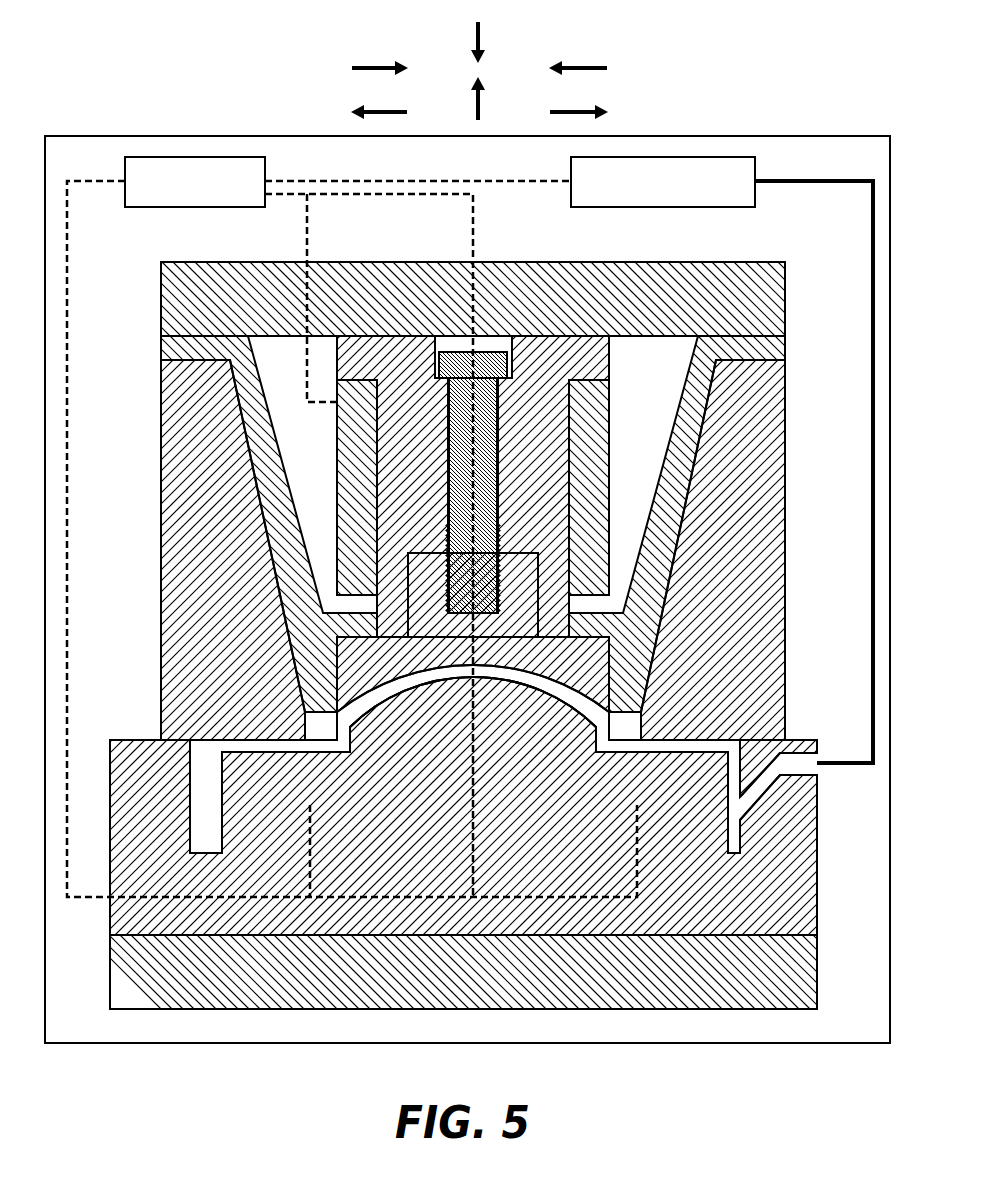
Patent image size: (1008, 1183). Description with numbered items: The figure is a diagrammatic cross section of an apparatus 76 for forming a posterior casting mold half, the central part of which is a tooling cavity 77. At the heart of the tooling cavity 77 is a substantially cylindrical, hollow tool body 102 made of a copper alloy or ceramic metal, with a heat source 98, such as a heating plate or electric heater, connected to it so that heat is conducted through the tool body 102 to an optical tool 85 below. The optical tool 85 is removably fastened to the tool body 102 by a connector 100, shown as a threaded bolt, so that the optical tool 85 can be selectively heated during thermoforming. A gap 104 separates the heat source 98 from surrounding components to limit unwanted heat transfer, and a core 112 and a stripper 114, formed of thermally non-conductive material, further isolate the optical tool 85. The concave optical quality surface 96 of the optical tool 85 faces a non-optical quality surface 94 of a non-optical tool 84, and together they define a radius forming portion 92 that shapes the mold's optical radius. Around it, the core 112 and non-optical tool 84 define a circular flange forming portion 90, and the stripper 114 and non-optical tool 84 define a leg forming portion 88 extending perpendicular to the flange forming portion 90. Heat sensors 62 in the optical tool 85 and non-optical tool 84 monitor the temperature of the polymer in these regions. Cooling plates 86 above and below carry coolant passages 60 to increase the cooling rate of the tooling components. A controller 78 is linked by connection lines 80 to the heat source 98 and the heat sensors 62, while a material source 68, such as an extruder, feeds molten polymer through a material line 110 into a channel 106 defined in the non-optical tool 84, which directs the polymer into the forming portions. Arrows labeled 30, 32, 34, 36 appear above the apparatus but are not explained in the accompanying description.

The first direction 30 is at (370, 66).
The second direction 32 is at (477, 32).
The third direction 34 is at (398, 110).
The fourth direction 36 is at (477, 110).
The passages 60 is at (210, 309).
The heat sensor 62 is at (461, 653).
The material source 68 is at (672, 157).
The apparatus 76 is at (742, 136).
The tooling cavity 77 is at (804, 654).
The controller 78 is at (194, 157).
The connection lines 80 is at (99, 181).
The non-optical tool 84 is at (797, 892).
The optical tool 85 is at (612, 650).
The cooling plate 86 is at (595, 272).
The leg forming portion 88 is at (203, 806).
The flange forming portion 90 is at (256, 758).
The radius forming portion 92 is at (401, 670).
The non-optical quality surface 94 is at (433, 673).
The optical quality surface 96 is at (493, 673).
The heat source 98 is at (357, 455).
The connector 100 is at (495, 350).
The tool body 102 is at (412, 435).
The gap 104 is at (298, 481).
The channel 106 is at (803, 752).
The material line 110 is at (808, 181).
The core 112 is at (282, 530).
The stripper 114 is at (173, 580).